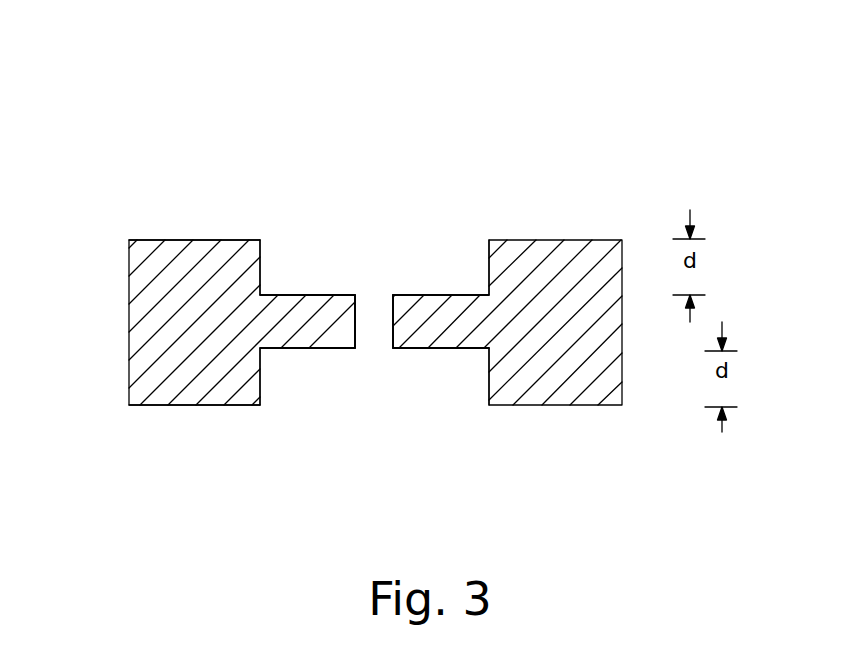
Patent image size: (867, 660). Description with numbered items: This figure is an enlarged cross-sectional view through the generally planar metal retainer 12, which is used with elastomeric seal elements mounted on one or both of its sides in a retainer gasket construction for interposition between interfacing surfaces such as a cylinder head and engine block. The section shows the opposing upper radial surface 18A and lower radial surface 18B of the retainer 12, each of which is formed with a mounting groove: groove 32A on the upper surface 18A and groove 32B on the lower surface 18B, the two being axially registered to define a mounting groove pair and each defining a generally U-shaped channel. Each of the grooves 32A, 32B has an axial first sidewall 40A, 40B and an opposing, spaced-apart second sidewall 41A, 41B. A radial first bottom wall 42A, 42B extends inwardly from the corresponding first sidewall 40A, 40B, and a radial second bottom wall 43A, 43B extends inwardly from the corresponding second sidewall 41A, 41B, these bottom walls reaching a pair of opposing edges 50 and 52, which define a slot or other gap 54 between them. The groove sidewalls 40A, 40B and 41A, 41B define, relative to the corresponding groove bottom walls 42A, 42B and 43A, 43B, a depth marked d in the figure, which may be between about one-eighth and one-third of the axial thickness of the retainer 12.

The retainer 12 is at (128, 318).
The upper radial surface 18A is at (183, 232).
The lower radial surface 18B is at (190, 410).
The axial first sidewall 40A is at (260, 273).
The axial first sidewall 40B is at (260, 390).
The mounting groove 32A is at (288, 290).
The mounting groove 32B is at (305, 357).
The radial first bottom wall 42A is at (347, 296).
The radial first bottom wall 42B is at (346, 349).
The opposing edge 50 is at (358, 313).
The opposing edge 52 is at (386, 350).
The slot or gap 54 is at (372, 327).
The second sidewall 41A is at (488, 268).
The second sidewall 41B is at (488, 383).
The second bottom wall 43A is at (405, 294).
The second bottom wall 43B is at (450, 348).